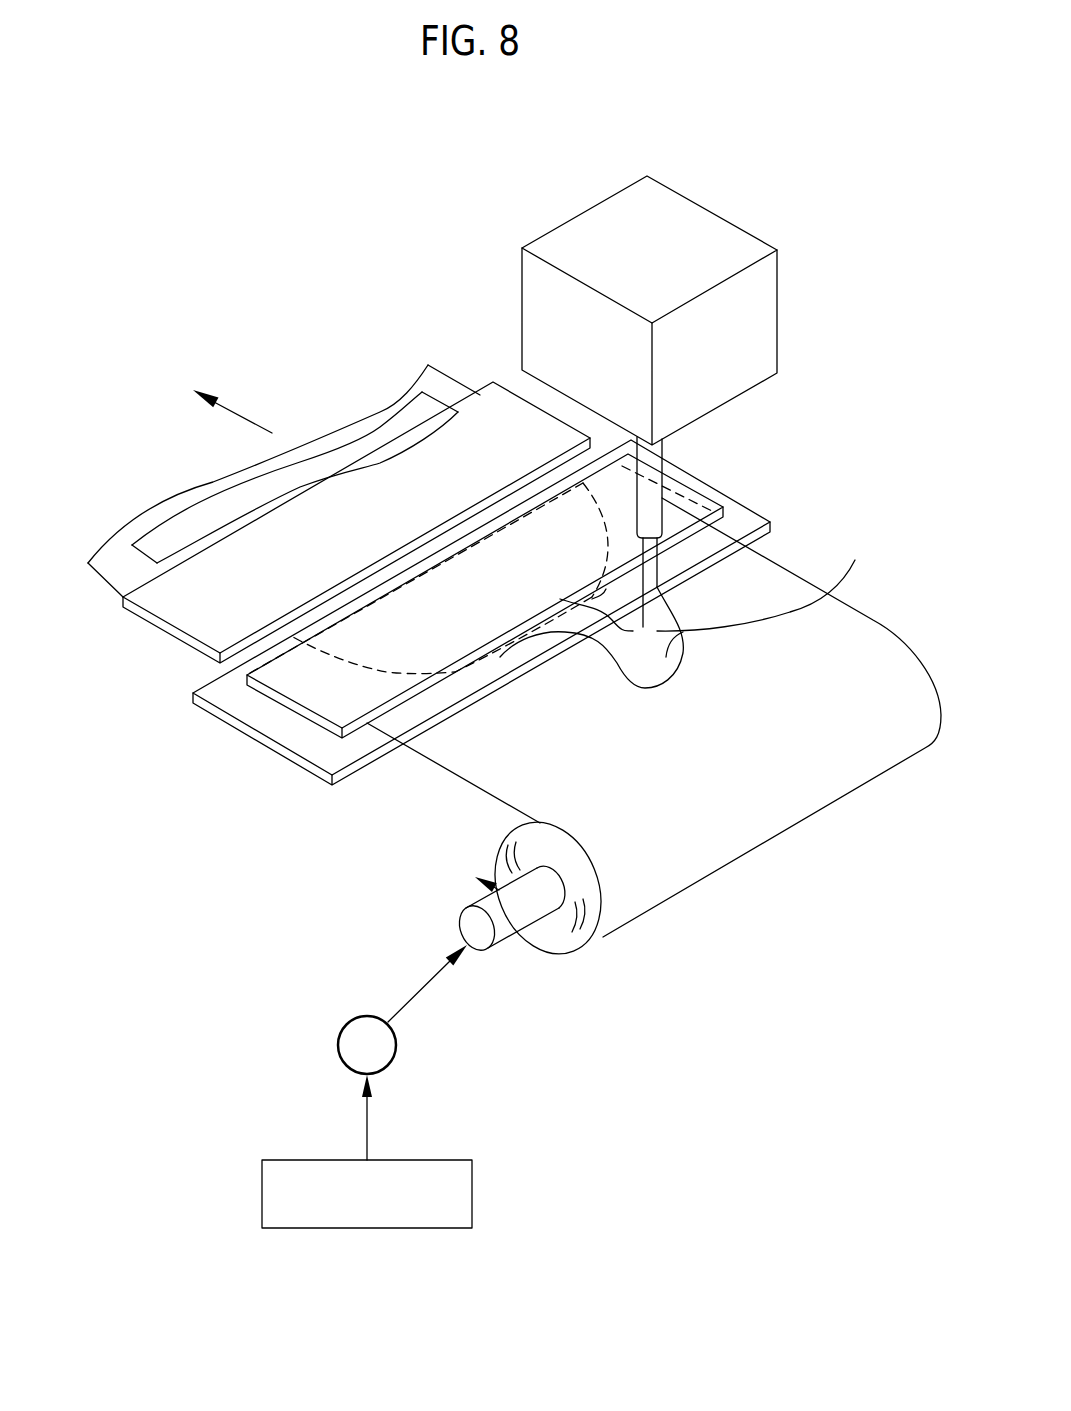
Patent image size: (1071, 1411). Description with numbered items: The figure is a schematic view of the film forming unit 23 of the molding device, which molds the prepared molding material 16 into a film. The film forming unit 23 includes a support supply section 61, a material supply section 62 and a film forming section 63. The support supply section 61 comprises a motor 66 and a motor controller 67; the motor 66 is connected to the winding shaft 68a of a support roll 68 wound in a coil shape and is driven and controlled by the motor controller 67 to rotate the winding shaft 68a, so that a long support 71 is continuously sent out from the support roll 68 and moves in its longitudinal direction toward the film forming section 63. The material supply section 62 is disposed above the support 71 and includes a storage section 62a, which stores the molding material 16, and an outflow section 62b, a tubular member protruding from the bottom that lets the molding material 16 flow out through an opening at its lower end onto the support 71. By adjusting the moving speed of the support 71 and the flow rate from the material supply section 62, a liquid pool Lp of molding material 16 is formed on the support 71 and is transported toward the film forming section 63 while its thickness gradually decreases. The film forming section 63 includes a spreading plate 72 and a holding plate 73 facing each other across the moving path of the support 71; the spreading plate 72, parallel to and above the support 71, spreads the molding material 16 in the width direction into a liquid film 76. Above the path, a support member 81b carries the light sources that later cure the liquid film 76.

The film forming unit 23 is at (178, 1098).
The material supply section 62 is at (710, 178).
The storage section 62a is at (738, 237).
The outflow section 62b is at (658, 492).
The molding material 16 is at (650, 593).
The liquid pool Lp is at (764, 575).
The support 71 is at (869, 633).
The support member 81b is at (175, 612).
The liquid film 76 is at (303, 633).
The spreading plate 72 is at (297, 705).
The holding plate 73 is at (290, 762).
The film forming section 63 is at (300, 799).
The support supply section 61 is at (562, 1070).
The support roll 68 is at (590, 923).
The winding shaft 68a is at (527, 905).
The motor 66 is at (397, 1043).
The motor controller 67 is at (367, 1228).